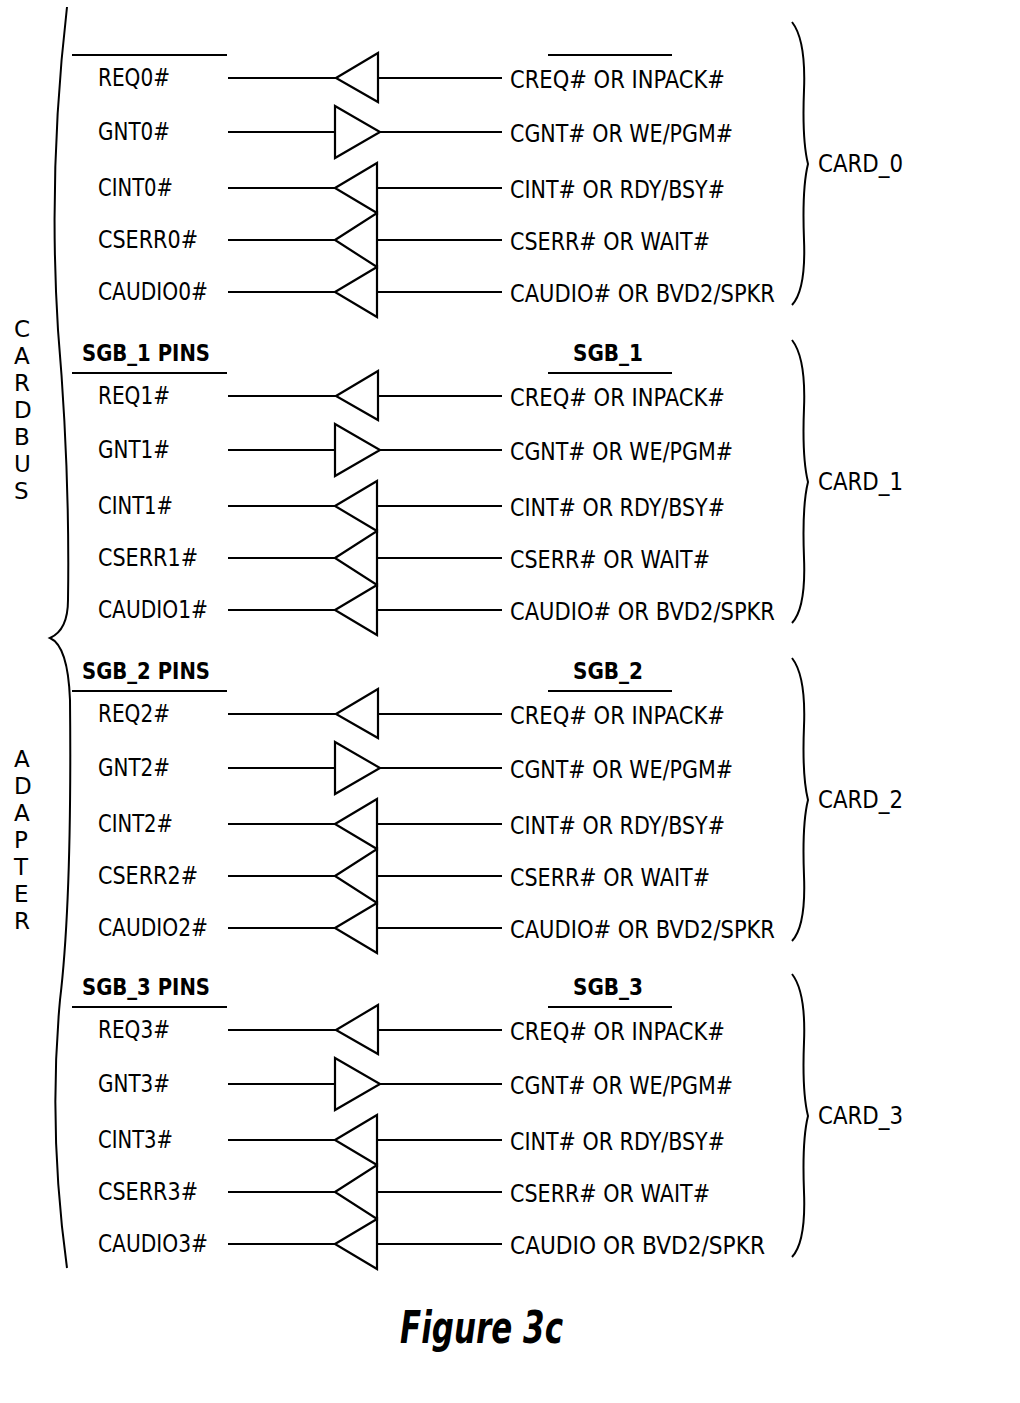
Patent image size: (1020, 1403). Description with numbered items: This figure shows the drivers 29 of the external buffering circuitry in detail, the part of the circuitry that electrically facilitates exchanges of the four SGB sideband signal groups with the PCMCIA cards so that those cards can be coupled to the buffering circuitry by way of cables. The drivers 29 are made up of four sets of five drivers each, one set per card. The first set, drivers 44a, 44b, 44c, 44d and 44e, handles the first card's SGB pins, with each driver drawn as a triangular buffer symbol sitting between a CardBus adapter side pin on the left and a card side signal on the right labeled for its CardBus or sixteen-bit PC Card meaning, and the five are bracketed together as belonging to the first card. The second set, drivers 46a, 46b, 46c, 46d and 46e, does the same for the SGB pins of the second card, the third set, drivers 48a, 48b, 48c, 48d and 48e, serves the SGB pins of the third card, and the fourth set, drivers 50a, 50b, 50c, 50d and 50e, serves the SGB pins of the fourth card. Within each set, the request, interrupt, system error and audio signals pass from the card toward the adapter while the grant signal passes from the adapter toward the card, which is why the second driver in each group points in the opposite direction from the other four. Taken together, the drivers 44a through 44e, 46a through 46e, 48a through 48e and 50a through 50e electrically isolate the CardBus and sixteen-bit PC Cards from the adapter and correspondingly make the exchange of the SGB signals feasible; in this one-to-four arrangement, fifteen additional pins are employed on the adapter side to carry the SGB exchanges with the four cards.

The drivers 29 is at (421, 22).
The driver 44a is at (367, 65).
The driver 44b is at (350, 122).
The driver 44c is at (357, 183).
The driver 44d is at (357, 232).
The driver 44e is at (357, 285).
The driver 46a is at (335, 391).
The driver 46b is at (323, 444).
The driver 46c is at (330, 504).
The driver 46d is at (331, 555).
The driver 46e is at (332, 607).
The driver 48a is at (335, 709).
The driver 48b is at (323, 762).
The driver 48c is at (330, 822).
The driver 48d is at (331, 873).
The driver 48e is at (332, 925).
The driver 50a is at (335, 1025).
The driver 50b is at (323, 1078).
The driver 50c is at (330, 1138).
The driver 50d is at (331, 1189).
The driver 50e is at (332, 1241).